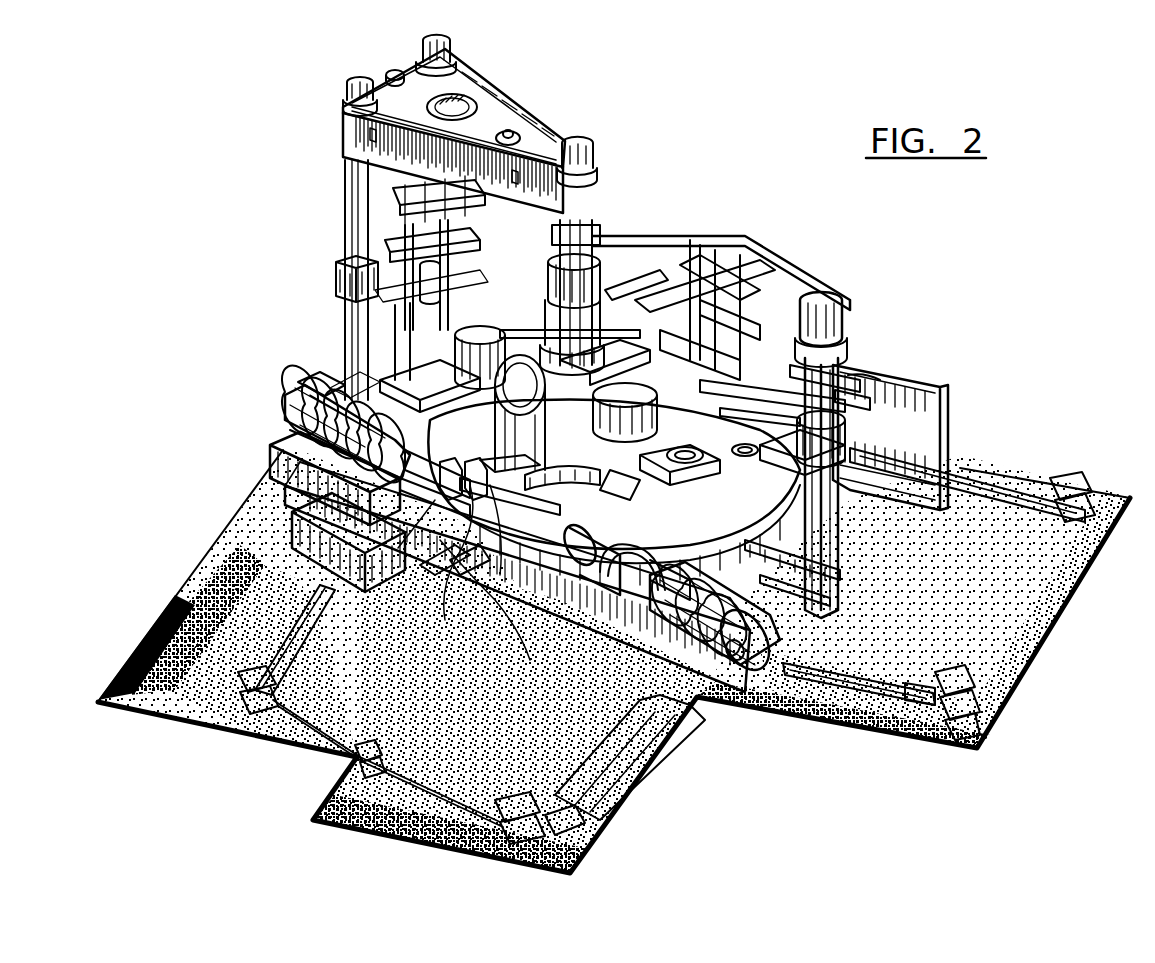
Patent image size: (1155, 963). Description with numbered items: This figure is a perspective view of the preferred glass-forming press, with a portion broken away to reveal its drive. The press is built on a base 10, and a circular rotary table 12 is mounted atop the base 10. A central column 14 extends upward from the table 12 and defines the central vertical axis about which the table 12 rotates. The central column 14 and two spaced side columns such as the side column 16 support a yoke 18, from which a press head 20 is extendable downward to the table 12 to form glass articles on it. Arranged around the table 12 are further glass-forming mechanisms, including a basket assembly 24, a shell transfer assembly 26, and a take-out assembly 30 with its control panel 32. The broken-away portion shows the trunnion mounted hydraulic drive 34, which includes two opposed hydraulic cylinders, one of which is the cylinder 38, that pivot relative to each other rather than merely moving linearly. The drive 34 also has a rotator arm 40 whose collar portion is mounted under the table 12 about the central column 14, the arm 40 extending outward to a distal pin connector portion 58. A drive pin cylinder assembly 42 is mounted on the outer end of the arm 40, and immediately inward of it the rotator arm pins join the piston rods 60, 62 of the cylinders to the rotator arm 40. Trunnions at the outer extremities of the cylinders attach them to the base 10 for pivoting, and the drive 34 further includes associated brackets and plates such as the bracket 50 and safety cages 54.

The base 10 is at (592, 650).
The rotary table 12 is at (785, 478).
The central column 14 is at (592, 238).
The side column 16 is at (355, 188).
The yoke 18 is at (530, 140).
The press head 20 is at (400, 240).
The basket assembly 24 is at (660, 528).
The shell transfer assembly 26 is at (700, 262).
The take-out assembly 30 is at (652, 487).
The control panel 32 is at (905, 425).
The trunnion mounted hydraulic drive 34 is at (249, 410).
The hydraulic cylinder 38 is at (724, 680).
The rotator arm 40 is at (540, 505).
The drive pin cylinder assembly 42 is at (426, 580).
The bracket 50 is at (288, 483).
The safety cage 54 is at (305, 392).
The pin connector portion 58 is at (470, 562).
The piston rod 60 is at (400, 546).
The piston rod 62 is at (495, 602).